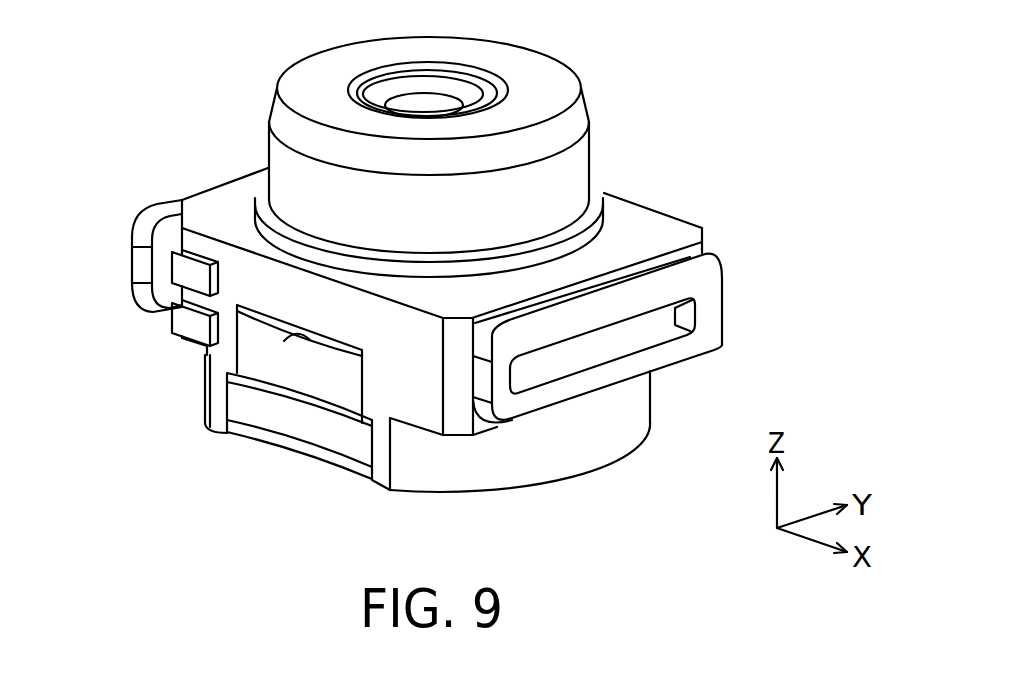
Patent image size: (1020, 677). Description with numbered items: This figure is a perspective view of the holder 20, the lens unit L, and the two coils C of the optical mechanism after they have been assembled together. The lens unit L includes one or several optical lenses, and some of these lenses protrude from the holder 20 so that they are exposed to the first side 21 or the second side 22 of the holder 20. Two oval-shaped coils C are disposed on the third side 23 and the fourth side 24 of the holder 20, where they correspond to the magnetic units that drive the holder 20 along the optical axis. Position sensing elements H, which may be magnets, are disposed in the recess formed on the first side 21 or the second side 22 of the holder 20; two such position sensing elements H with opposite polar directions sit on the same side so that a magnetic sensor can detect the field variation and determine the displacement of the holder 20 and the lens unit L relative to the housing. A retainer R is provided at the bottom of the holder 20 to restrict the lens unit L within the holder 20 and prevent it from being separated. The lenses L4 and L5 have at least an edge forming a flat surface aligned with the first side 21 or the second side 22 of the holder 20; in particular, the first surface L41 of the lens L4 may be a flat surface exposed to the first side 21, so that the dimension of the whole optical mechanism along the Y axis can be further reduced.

The lens unit L is at (447, 103).
The holder 20 is at (620, 212).
The first side 21 is at (397, 378).
The second side 22 is at (693, 213).
The third side 23 is at (602, 278).
The fourth side 24 is at (220, 182).
The position sensing element H is at (172, 317).
The coil C is at (170, 207).
The lens L4 is at (290, 333).
The first surface L41 is at (252, 357).
The lens L5 is at (247, 405).
The retainer R is at (253, 430).